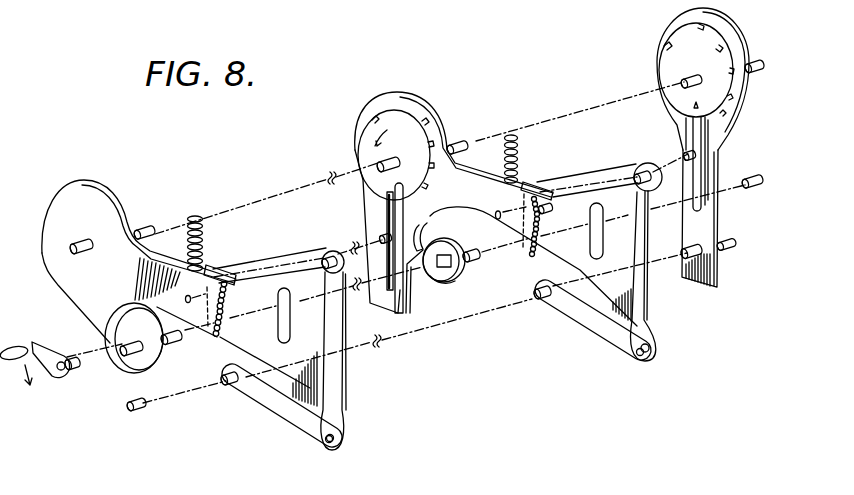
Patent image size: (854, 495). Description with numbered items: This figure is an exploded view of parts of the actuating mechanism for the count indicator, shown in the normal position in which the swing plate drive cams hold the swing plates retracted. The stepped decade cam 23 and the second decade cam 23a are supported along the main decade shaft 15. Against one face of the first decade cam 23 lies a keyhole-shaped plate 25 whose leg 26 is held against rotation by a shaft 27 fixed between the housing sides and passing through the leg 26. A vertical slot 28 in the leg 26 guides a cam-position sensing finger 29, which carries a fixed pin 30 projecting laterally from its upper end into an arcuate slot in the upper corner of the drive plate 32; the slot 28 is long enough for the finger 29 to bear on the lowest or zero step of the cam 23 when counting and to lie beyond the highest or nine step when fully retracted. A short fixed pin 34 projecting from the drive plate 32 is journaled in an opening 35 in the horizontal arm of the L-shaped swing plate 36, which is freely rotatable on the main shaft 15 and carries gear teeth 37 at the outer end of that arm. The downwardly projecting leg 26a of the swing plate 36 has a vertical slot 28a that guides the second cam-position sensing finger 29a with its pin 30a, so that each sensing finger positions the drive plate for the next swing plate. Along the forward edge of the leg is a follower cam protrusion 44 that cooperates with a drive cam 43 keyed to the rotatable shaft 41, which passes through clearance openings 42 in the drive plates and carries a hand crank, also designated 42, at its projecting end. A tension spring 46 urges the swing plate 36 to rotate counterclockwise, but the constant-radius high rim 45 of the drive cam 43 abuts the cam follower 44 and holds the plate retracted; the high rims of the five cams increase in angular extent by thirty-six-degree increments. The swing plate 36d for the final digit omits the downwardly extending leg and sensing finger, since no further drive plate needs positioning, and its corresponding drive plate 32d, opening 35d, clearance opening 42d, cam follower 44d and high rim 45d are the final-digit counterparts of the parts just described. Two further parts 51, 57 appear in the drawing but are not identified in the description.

The main decade shaft 15 is at (144, 226).
The stepped decade cam 23 is at (667, 51).
The second decade cam 23a is at (371, 134).
The keyhole-shaped plate 25 is at (739, 113).
The leg 26 is at (708, 227).
The downwardly projecting leg 26a is at (372, 304).
The shaft 27 is at (731, 248).
The slot 28 is at (705, 208).
The vertical slot 28a is at (398, 310).
The cam-position sensing finger 29 is at (703, 163).
The second cam-position sensing finger 29a is at (386, 275).
The fixed pin 30 is at (685, 153).
The pin 30a is at (381, 237).
The drive plate 32 is at (558, 255).
The bracket plate 32d is at (317, 389).
The short fixed pin 34 is at (640, 177).
The opening 35 is at (495, 214).
The arm 35d is at (285, 421).
The L-shaped swing plate 36 is at (457, 178).
The swing plate for the final digit 36d is at (152, 257).
The gear teeth 37 is at (230, 326).
The rotatable shaft 41 is at (78, 370).
The clearance opening 42 is at (596, 259).
The slot 42d is at (285, 343).
The drive cam 43 is at (454, 275).
The follower cam protrusion 44 is at (424, 230).
The lever 44d is at (100, 333).
The constant-radius high rim 45 is at (436, 244).
The hub disk 45d is at (170, 366).
The tension spring 46 is at (519, 149).
The chain 51 is at (554, 212).
The chain 57 is at (537, 243).